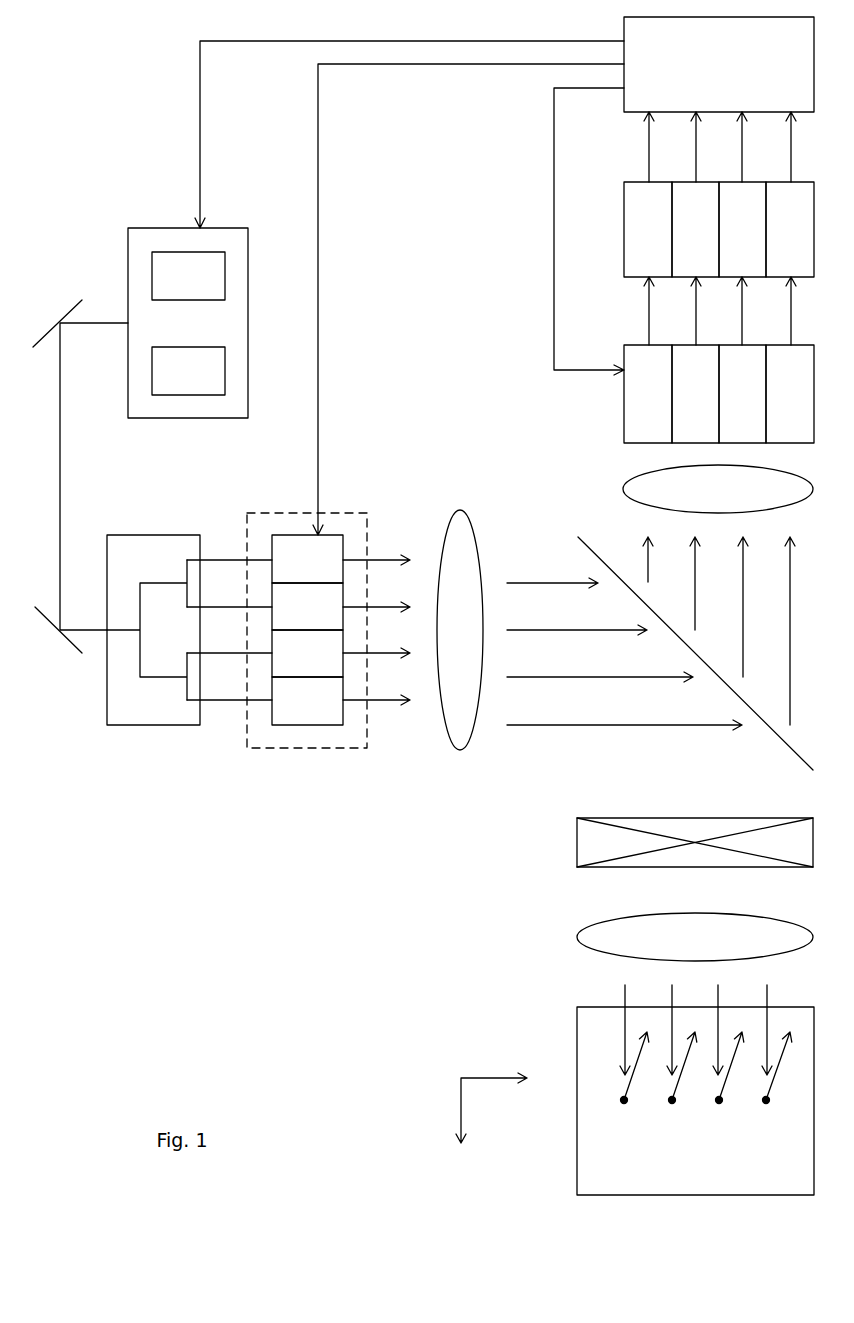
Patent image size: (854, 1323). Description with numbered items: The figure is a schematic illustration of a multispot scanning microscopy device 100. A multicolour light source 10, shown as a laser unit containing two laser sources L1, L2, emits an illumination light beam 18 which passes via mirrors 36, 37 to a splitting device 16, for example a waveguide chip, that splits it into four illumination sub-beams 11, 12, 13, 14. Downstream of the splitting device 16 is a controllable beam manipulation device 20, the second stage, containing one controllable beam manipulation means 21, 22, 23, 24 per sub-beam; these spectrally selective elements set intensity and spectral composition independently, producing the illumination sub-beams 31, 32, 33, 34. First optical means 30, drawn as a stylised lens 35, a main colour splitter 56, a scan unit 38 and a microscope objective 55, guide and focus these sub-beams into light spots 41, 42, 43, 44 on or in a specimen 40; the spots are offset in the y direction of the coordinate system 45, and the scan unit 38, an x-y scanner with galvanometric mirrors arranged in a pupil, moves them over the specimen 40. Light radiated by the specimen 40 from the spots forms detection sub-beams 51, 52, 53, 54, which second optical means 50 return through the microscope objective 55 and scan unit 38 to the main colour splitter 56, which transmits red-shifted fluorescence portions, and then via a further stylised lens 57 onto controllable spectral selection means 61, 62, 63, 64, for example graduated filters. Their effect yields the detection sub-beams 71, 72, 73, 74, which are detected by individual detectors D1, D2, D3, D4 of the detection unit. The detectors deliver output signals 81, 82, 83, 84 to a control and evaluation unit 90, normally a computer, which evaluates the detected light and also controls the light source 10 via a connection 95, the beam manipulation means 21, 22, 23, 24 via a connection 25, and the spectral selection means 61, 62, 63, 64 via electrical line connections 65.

The device 100 is at (152, 991).
The control and evaluation unit 90 is at (719, 64).
The connection 95 is at (395, 134).
The connection 25 is at (468, 299).
The electrical line connections 65 is at (574, 231).
The output signal 81 is at (636, 147).
The output signal 82 is at (684, 147).
The output signal 83 is at (731, 147).
The output signal 84 is at (778, 147).
The individual detector D1 is at (648, 229).
The individual detector D2 is at (695, 229).
The individual detector D3 is at (742, 229).
The individual detector D4 is at (790, 229).
The detection sub-beam 71 is at (637, 311).
The detection sub-beam 72 is at (684, 311).
The detection sub-beam 73 is at (731, 311).
The detection sub-beam 74 is at (778, 311).
The controllable spectral selection means 61 is at (648, 394).
The controllable spectral selection means 62 is at (695, 394).
The controllable spectral selection means 63 is at (742, 394).
The controllable spectral selection means 64 is at (790, 394).
The multicolour light source 10 is at (188, 323).
The laser source L1 is at (188, 276).
The laser source L2 is at (188, 371).
The mirror 36 is at (75, 298).
The illumination light beam 18 is at (93, 463).
The mirror 37 is at (72, 652).
The splitting device 16 is at (153, 630).
The illumination sub-beam 11 is at (229, 549).
The illumination sub-beam 12 is at (229, 596).
The illumination sub-beam 13 is at (229, 642).
The illumination sub-beam 14 is at (229, 689).
The controllable beam manipulation device 20 is at (307, 630).
The controllable beam manipulation means 21 is at (307, 559).
The controllable beam manipulation means 22 is at (307, 606).
The controllable beam manipulation means 23 is at (307, 653).
The controllable beam manipulation means 24 is at (307, 701).
The illumination sub-beam 31 is at (490, 806).
The illumination sub-beam 32 is at (513, 830).
The illumination sub-beam 33 is at (536, 853).
The illumination sub-beam 34 is at (561, 876).
The first optical means 30 is at (625, 713).
The stylised lens 35 is at (460, 630).
The second optical means 50 is at (626, 713).
The stylised lens 57 is at (718, 489).
The main colour splitter 56 is at (802, 763).
The scan unit 38 is at (577, 830).
The microscope objective 55 is at (695, 937).
The detection sub-beam 51 is at (639, 818).
The detection sub-beam 52 is at (687, 818).
The detection sub-beam 53 is at (734, 818).
The detection sub-beam 54 is at (781, 818).
The specimen 40 is at (695, 1101).
The light spot 41 is at (611, 1100).
The light spot 42 is at (659, 1100).
The light spot 43 is at (706, 1100).
The light spot 44 is at (753, 1100).
The coordinate system 45 is at (457, 1087).